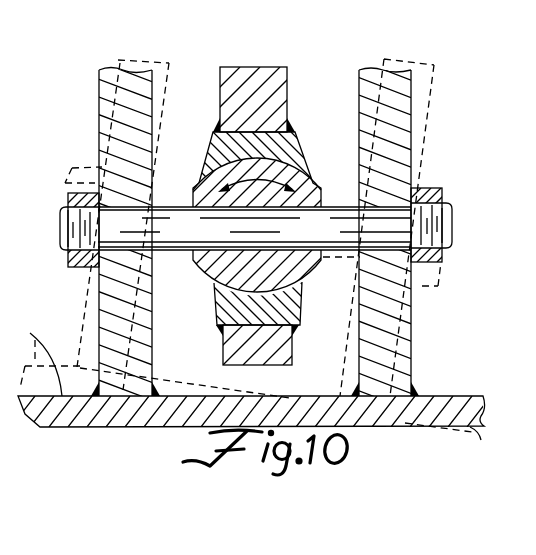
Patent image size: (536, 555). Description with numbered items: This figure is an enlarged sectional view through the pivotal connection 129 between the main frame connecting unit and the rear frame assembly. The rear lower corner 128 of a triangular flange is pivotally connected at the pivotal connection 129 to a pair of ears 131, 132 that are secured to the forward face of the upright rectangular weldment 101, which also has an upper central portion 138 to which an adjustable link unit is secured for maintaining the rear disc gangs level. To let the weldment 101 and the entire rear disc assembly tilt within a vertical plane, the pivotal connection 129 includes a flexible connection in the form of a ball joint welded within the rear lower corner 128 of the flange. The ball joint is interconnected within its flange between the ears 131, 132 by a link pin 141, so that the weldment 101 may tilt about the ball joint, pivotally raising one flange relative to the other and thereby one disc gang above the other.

The weldment 101 is at (31, 334).
The rear lower corner 128 is at (280, 78).
The pivotal connection 129 is at (207, 115).
The ear 131 is at (121, 70).
The ear 132 is at (411, 100).
The upper central portion 138 is at (313, 140).
The link pin 141 is at (337, 262).